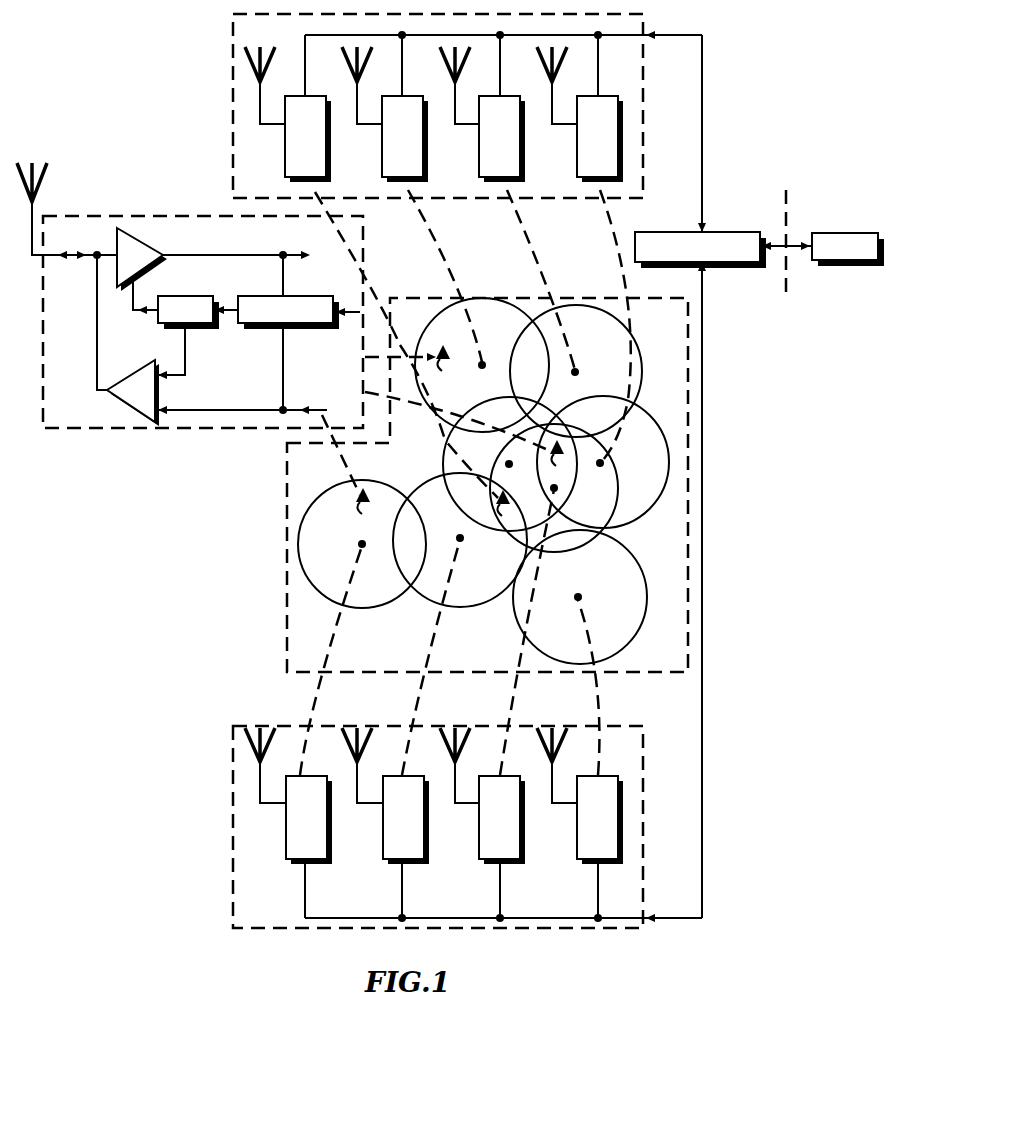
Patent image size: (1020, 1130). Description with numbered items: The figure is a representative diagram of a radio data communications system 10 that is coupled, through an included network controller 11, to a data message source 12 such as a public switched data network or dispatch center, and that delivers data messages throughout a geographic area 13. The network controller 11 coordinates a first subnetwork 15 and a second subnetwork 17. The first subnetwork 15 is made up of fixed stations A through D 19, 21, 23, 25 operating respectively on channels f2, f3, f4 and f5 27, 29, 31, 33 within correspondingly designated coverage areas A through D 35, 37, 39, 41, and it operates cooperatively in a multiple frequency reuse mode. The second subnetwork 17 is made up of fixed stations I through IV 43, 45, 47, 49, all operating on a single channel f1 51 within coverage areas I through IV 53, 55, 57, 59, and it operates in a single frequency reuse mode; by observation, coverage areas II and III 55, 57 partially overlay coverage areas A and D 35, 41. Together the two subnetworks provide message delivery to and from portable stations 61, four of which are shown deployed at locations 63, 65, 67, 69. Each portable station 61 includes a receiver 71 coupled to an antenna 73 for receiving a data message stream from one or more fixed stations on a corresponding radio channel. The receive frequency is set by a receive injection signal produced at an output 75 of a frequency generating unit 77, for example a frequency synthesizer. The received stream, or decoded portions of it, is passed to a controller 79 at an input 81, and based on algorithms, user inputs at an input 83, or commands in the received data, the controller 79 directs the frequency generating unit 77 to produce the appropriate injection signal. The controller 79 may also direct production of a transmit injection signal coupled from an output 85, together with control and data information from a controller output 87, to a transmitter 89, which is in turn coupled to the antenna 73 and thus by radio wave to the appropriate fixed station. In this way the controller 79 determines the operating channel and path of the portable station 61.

The radio data communications system 10 is at (772, 432).
The network controller 11 is at (705, 230).
The data message source 12 is at (865, 232).
The geographic area 13 is at (286, 630).
The first subnetwork 15 is at (643, 140).
The second subnetwork 17 is at (232, 764).
The fixed station A 19 is at (297, 114).
The fixed station B 21 is at (394, 114).
The fixed station C 23 is at (492, 114).
The fixed station D 25 is at (589, 114).
The channel f2 27 is at (308, 165).
The channel f3 29 is at (405, 165).
The channel f4 31 is at (502, 165).
The channel f5 33 is at (600, 165).
The coverage area A 35 is at (440, 454).
The coverage area B 37 is at (430, 320).
The coverage area C 39 is at (618, 370).
The coverage area D 41 is at (626, 514).
The fixed station I 43 is at (320, 762).
The fixed station II 45 is at (417, 762).
The fixed station III 47 is at (513, 762).
The fixed station IV 49 is at (611, 762).
The channel f1 51 is at (442, 796).
The coverage area I 53 is at (376, 611).
The coverage area II 55 is at (460, 608).
The coverage area III 57 is at (630, 535).
The coverage area IV 59 is at (520, 628).
The portable station 61 is at (106, 430).
The location 63 is at (358, 508).
The location 65 is at (496, 502).
The location 67 is at (561, 461).
The location 69 is at (459, 367).
The receiver 71 is at (136, 244).
The antenna 73 is at (32, 166).
The output 75 is at (139, 293).
The frequency generating unit 77 is at (203, 296).
The controller 79 is at (322, 296).
The input 81 is at (283, 280).
The input 83 is at (354, 316).
The output 85 is at (186, 352).
The controller output 87 is at (280, 365).
The transmitter 89 is at (146, 364).